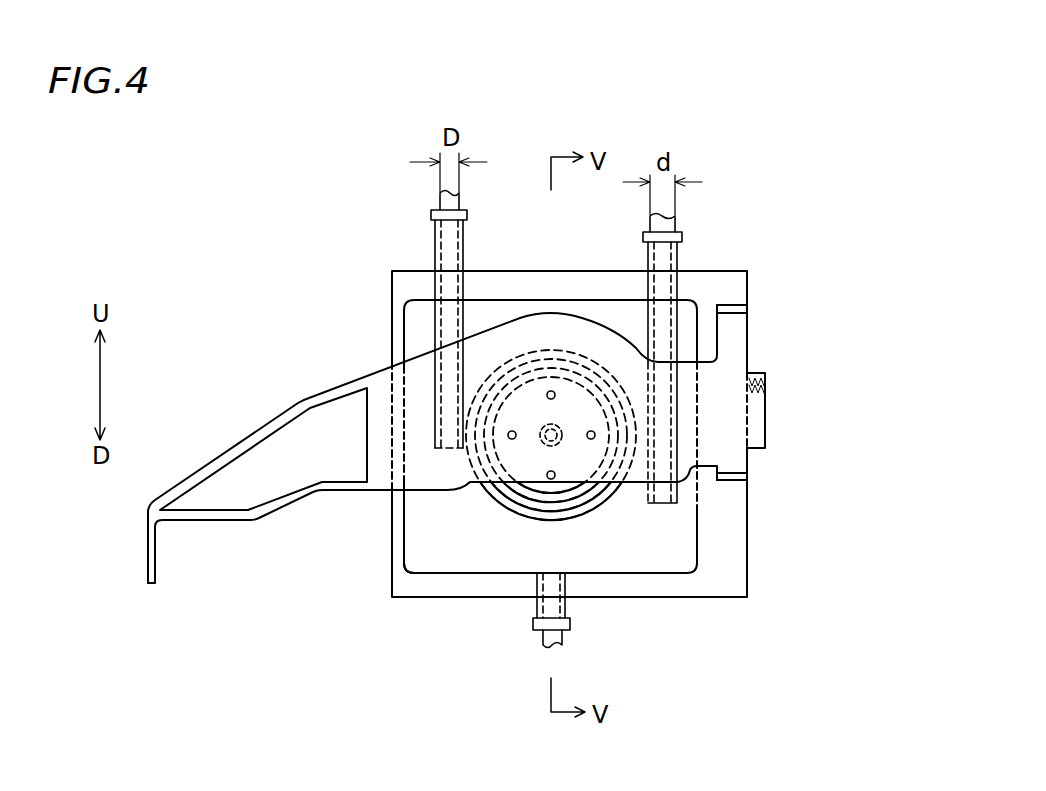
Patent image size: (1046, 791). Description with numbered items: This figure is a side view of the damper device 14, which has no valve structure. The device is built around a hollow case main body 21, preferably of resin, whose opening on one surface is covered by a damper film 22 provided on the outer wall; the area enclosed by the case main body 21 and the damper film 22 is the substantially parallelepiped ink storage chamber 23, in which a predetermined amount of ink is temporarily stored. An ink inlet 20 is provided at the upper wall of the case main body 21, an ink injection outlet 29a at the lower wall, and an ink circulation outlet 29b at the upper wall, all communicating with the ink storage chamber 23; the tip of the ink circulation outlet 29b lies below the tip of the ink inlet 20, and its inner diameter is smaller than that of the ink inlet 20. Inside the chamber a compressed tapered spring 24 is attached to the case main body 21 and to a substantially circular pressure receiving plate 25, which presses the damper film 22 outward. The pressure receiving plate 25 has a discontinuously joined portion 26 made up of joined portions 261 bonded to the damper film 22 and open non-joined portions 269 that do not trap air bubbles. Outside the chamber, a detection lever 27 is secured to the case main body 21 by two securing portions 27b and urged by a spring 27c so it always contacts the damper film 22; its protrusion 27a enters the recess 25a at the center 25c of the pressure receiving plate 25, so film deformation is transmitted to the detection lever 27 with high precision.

The damper device 14 is at (762, 176).
The case main body 21 is at (771, 250).
The damper film 22 is at (418, 540).
The ink storage chamber 23 is at (418, 560).
The ink inlet 20 is at (456, 248).
The ink injection outlet 29a is at (552, 608).
The ink circulation outlet 29b is at (655, 252).
The detection lever 27 is at (350, 370).
The protrusion 27a is at (558, 441).
The securing portions 27b is at (745, 307).
The spring 27c is at (768, 378).
The tapered spring 24 is at (543, 518).
The pressure receiving plate 25 is at (528, 492).
The recess 25a is at (652, 561).
The center of the pressure receiving plate 25c is at (562, 438).
The discontinuously joined portion 26 is at (694, 488).
The joined portions 261 is at (596, 435).
The non-joined portions 269 is at (566, 446).